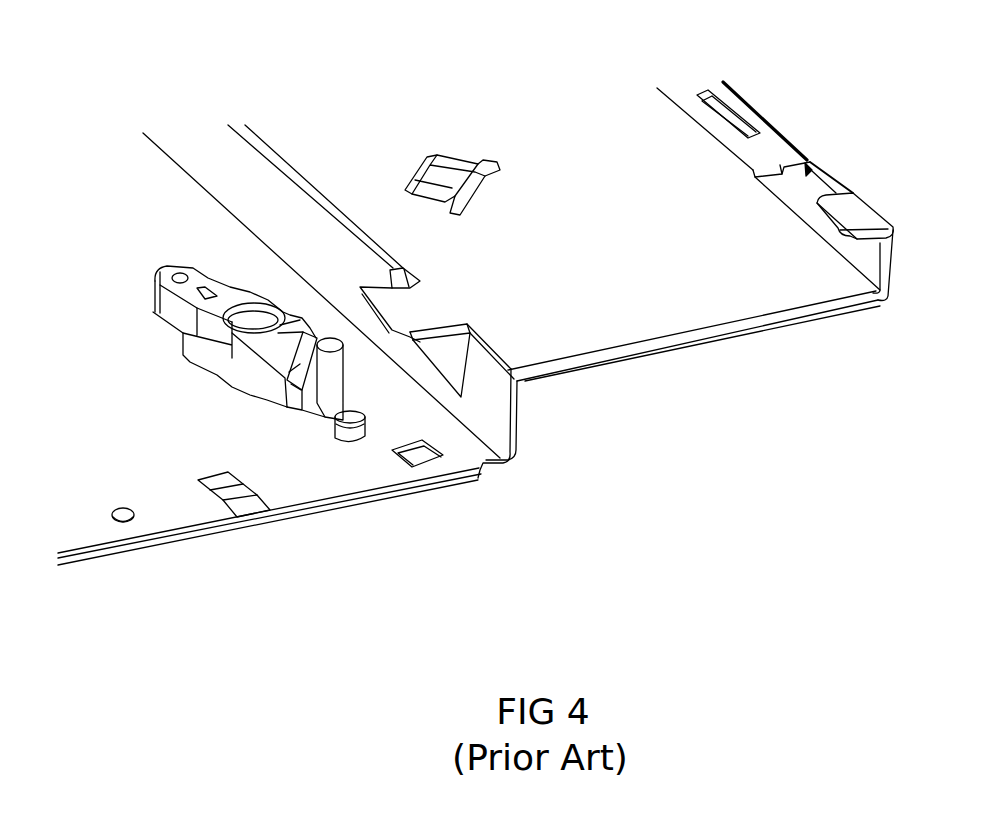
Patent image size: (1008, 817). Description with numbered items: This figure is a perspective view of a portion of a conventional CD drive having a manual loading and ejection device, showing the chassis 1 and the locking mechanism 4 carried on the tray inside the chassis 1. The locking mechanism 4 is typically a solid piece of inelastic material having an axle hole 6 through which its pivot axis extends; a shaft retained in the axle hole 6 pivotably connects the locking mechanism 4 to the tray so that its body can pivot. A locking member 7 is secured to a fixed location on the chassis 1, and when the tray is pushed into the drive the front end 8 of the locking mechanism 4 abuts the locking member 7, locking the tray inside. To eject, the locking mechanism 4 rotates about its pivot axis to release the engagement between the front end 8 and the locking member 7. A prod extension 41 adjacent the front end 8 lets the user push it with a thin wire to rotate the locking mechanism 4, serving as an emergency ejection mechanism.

The chassis 1 is at (791, 107).
The locking mechanism 4 is at (265, 307).
The axle hole 6 is at (263, 305).
The locking member 7 is at (348, 440).
The front end 8 is at (328, 412).
The prod extension 41 is at (286, 415).